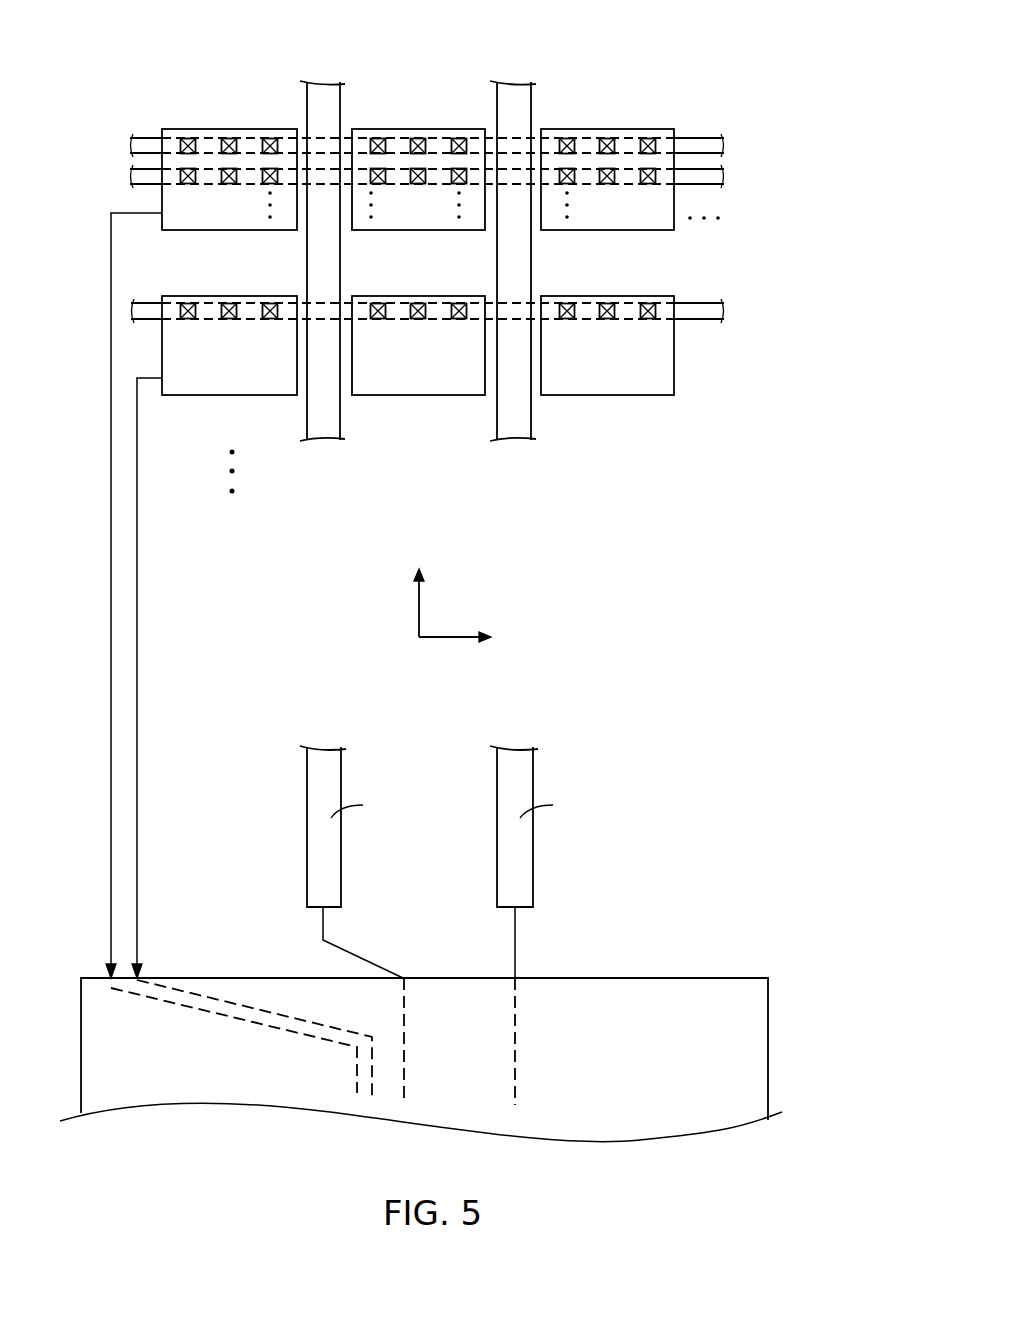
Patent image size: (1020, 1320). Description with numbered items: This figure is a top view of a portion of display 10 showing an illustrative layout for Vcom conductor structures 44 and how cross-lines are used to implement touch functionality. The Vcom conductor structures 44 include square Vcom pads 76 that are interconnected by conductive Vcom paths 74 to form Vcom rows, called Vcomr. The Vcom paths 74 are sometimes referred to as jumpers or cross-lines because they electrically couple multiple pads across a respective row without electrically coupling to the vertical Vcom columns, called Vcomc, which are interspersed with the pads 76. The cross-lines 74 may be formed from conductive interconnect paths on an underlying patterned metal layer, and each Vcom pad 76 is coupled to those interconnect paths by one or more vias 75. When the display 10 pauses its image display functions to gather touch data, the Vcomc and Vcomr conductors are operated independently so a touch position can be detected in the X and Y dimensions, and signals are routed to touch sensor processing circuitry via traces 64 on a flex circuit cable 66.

The display 10 is at (733, 35).
The Vcom conductor structures 44 is at (172, 107).
The Vcom paths 74 is at (207, 138).
The vias 75 is at (188, 185).
The Vcom pads 76 is at (216, 296).
The traces 64 is at (355, 1068).
The flex circuit cable 66 is at (768, 1032).